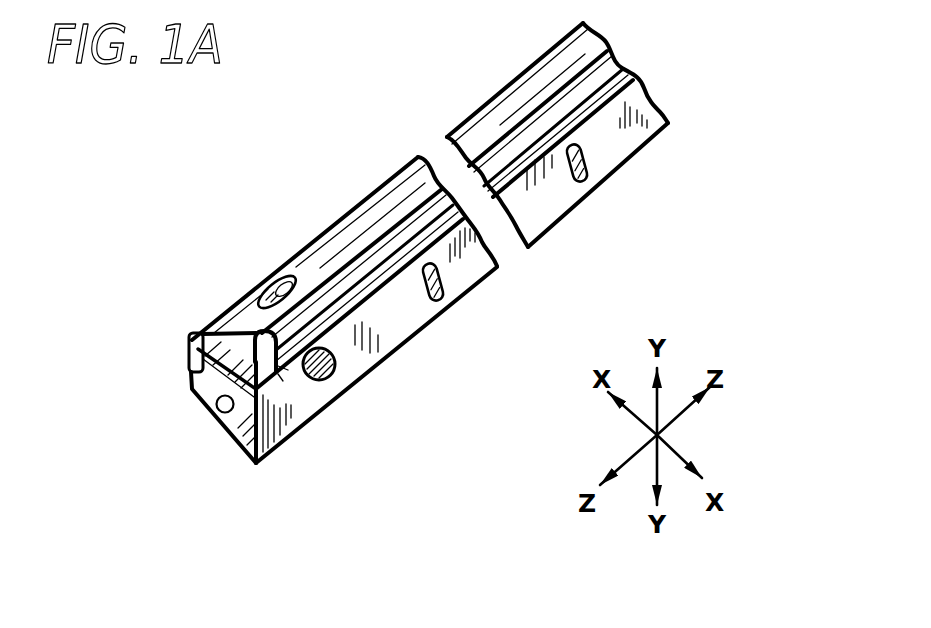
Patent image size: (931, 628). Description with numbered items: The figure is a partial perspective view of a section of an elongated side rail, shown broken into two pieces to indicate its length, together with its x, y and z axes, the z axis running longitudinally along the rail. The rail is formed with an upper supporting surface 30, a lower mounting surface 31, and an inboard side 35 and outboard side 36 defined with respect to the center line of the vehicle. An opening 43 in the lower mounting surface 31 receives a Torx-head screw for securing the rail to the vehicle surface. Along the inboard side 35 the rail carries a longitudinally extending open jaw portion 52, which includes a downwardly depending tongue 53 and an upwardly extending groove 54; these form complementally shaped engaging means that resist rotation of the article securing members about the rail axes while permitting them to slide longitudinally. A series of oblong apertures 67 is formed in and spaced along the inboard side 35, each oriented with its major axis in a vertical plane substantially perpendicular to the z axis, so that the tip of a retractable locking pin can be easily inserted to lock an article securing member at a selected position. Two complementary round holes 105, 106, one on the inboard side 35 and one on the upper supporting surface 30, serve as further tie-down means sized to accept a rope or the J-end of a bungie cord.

The upper supporting surface 30 is at (368, 206).
The round hole 105 is at (285, 280).
The opening 43 is at (260, 348).
The upwardly extending groove 54 is at (240, 336).
The outboard side 36 is at (188, 362).
The lower mounting surface 31 is at (232, 433).
The inboard side 35 is at (286, 447).
The downwardly depending tongue 53 is at (288, 382).
The open jaw portion 52 is at (283, 366).
The round hole 106 is at (337, 382).
The oblong aperture 67 is at (443, 290).